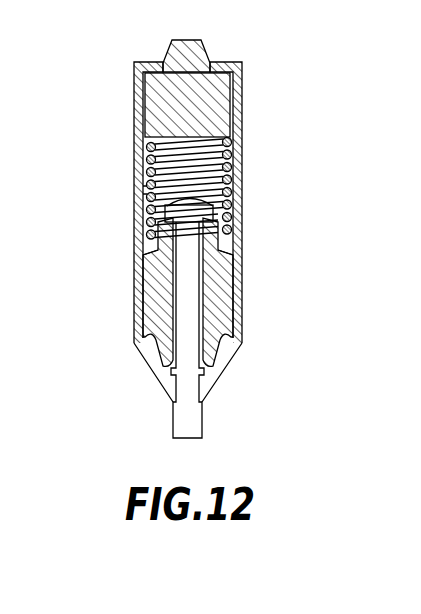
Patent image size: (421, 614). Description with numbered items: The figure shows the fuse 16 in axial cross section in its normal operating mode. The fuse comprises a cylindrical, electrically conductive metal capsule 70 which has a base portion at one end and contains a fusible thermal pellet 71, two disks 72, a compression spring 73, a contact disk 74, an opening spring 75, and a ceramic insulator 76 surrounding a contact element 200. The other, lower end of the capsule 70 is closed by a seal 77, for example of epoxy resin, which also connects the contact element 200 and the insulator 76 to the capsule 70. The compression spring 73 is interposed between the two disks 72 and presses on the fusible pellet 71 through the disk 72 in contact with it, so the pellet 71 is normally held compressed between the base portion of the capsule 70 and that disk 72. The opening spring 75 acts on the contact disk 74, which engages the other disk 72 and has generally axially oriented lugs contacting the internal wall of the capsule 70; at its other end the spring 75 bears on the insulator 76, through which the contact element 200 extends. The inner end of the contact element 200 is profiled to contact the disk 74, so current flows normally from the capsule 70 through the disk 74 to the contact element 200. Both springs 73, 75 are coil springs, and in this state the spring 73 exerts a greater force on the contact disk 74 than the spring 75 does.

The fuse 16 is at (250, 67).
The capsule 70 is at (244, 103).
The fusible thermal pellet 71 is at (139, 98).
The disks 72 is at (244, 142).
The compression spring 73 is at (141, 190).
The contact disk 74 is at (245, 200).
The opening spring 75 is at (247, 253).
The ceramic insulator 76 is at (145, 283).
The seal 77 is at (152, 351).
The contact element 200 is at (185, 420).